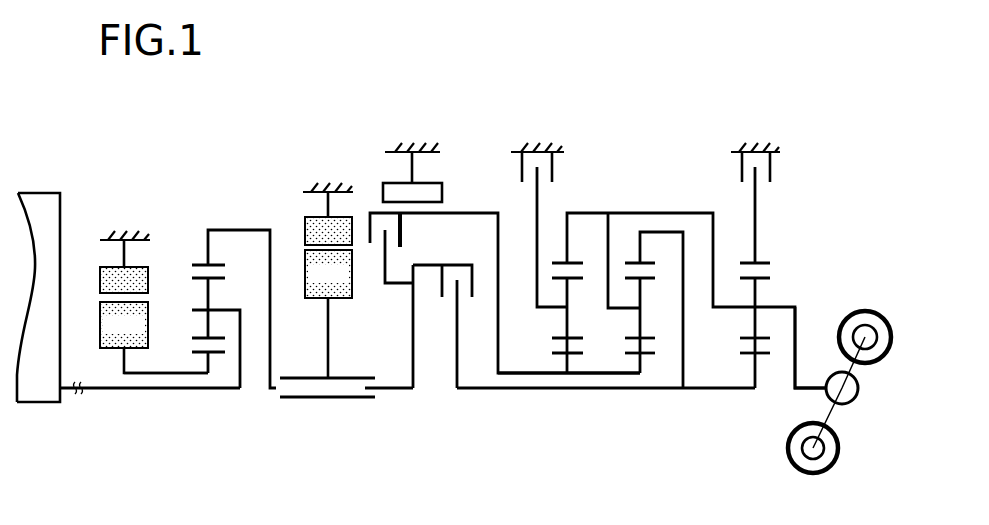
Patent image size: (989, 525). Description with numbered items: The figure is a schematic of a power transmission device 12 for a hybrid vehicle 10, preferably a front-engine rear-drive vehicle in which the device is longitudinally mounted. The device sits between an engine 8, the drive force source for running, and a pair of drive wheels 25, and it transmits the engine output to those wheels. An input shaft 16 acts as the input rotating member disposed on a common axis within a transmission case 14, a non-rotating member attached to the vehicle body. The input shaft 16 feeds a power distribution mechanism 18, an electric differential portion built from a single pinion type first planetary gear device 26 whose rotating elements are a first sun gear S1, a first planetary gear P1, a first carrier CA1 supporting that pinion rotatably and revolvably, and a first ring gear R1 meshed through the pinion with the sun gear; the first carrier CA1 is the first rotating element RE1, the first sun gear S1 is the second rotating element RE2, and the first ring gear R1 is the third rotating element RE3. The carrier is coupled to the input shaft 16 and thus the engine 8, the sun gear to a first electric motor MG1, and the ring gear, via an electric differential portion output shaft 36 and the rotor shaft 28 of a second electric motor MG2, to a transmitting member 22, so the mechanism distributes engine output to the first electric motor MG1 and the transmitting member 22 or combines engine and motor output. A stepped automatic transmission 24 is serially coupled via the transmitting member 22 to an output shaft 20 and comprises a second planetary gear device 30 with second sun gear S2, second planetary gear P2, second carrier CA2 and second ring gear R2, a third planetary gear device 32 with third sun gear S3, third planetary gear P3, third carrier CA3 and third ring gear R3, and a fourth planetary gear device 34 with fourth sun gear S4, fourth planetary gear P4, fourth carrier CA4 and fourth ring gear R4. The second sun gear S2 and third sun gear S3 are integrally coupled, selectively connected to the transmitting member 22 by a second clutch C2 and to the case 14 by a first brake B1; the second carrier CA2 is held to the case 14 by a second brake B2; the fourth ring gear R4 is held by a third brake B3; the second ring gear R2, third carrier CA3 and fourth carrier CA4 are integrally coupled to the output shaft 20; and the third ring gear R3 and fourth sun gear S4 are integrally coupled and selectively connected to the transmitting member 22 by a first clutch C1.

The engine 8 is at (38, 205).
The vehicle 10 is at (655, 121).
The power transmission device 12 is at (620, 190).
The transmission case 14 is at (130, 238).
The input shaft 16 is at (130, 393).
The power distribution mechanism 18 is at (224, 291).
The output shaft 20 is at (806, 386).
The transmitting member 22 is at (387, 393).
The stepped automatic transmission 24 is at (501, 393).
The drive wheels 25 is at (875, 318).
The first planetary gear device 26 is at (208, 395).
The rotor shaft 28 is at (322, 400).
The second planetary gear device 30 is at (569, 301).
The third planetary gear device 32 is at (627, 337).
The fourth planetary gear device 34 is at (743, 298).
The electric differential portion output shaft 36 is at (272, 347).
The first electric motor MG1 is at (154, 306).
The second electric motor MG2 is at (328, 285).
The first rotating element RE1 is at (248, 318).
The second rotating element RE2 is at (163, 366).
The third rotating element RE3 is at (248, 222).
The first ring gear R1 is at (222, 270).
The first planetary gear P1 is at (204, 280).
The first carrier CA1 is at (214, 312).
The first sun gear S1 is at (218, 354).
The first clutch C1 is at (442, 316).
The second clutch C2 is at (505, 300).
The first brake B1 is at (412, 164).
The second brake B2 is at (537, 154).
The third brake B3 is at (756, 154).
The second ring gear R2 is at (570, 263).
The second planetary gear P2 is at (575, 341).
The second carrier CA2 is at (560, 310).
The second sun gear S2 is at (553, 354).
The third ring gear R3 is at (645, 264).
The third planetary gear P3 is at (652, 341).
The third carrier CA3 is at (628, 312).
The third sun gear S3 is at (643, 355).
The fourth ring gear R4 is at (751, 263).
The fourth planetary gear P4 is at (761, 343).
The fourth carrier CA4 is at (745, 311).
The fourth sun gear S4 is at (746, 356).